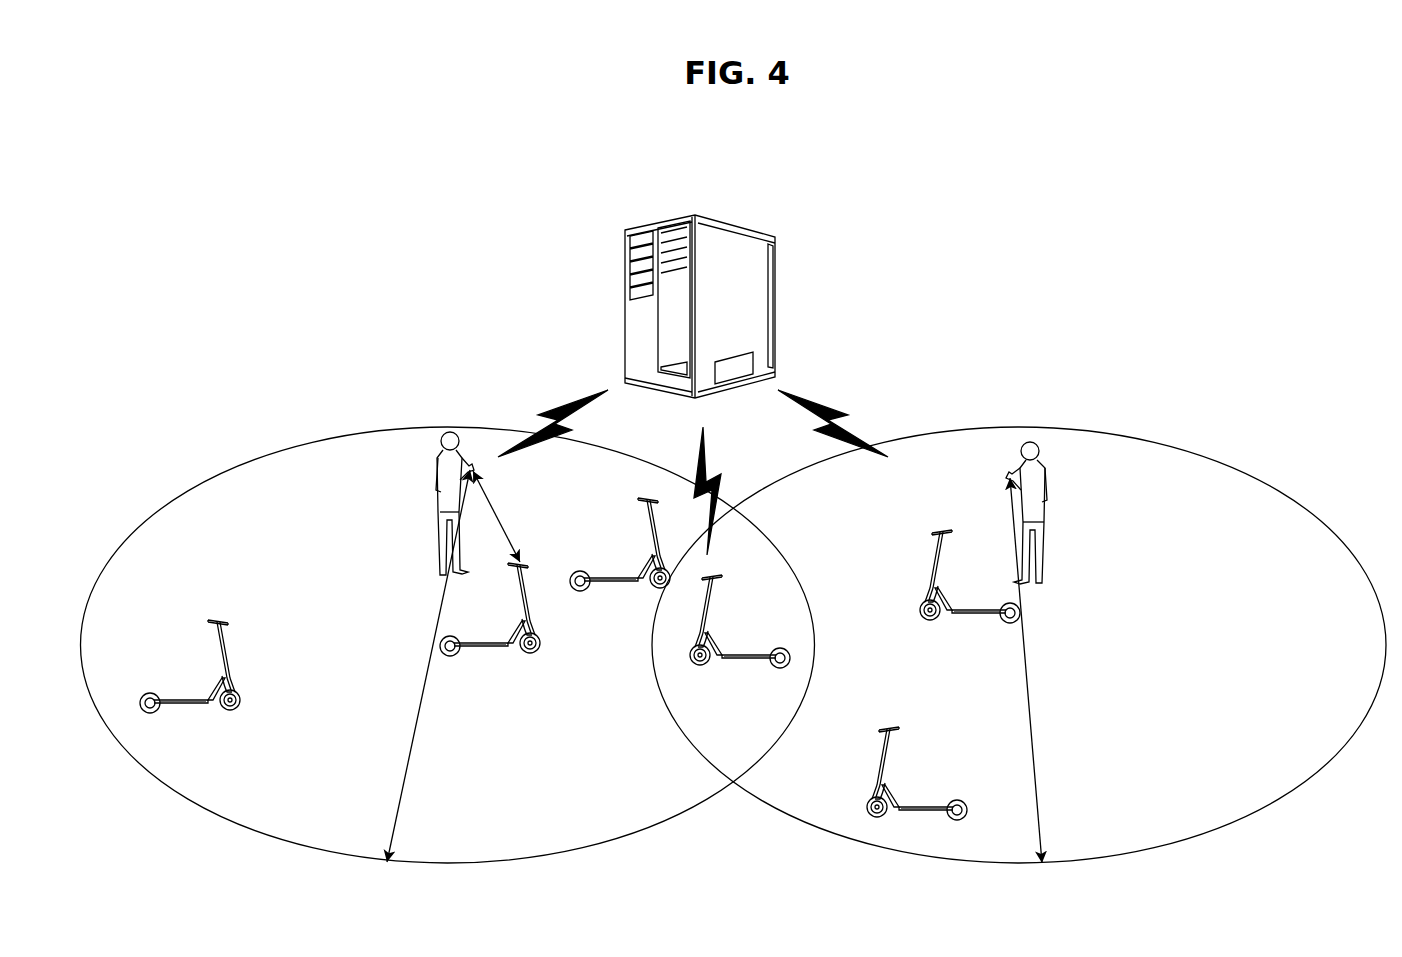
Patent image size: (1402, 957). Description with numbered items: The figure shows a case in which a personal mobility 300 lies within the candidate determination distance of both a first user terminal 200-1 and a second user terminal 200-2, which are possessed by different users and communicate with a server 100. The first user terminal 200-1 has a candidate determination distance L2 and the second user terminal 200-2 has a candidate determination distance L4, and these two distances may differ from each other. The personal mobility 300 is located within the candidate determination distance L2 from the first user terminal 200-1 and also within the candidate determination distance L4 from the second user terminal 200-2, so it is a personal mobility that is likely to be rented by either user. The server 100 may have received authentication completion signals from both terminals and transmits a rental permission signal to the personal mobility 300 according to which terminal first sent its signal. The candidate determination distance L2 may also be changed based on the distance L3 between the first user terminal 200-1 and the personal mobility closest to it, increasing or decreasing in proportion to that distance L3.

The server 100 is at (717, 207).
The first user terminal 200-1 is at (470, 452).
The second user terminal 200-2 is at (1007, 463).
The personal mobility 300 is at (736, 682).
The candidate determination distance of the first user terminal L2 is at (428, 666).
The distance between the closest personal mobility and the user terminal L3 is at (499, 516).
The candidate determination distance of the second user terminal L4 is at (1036, 670).